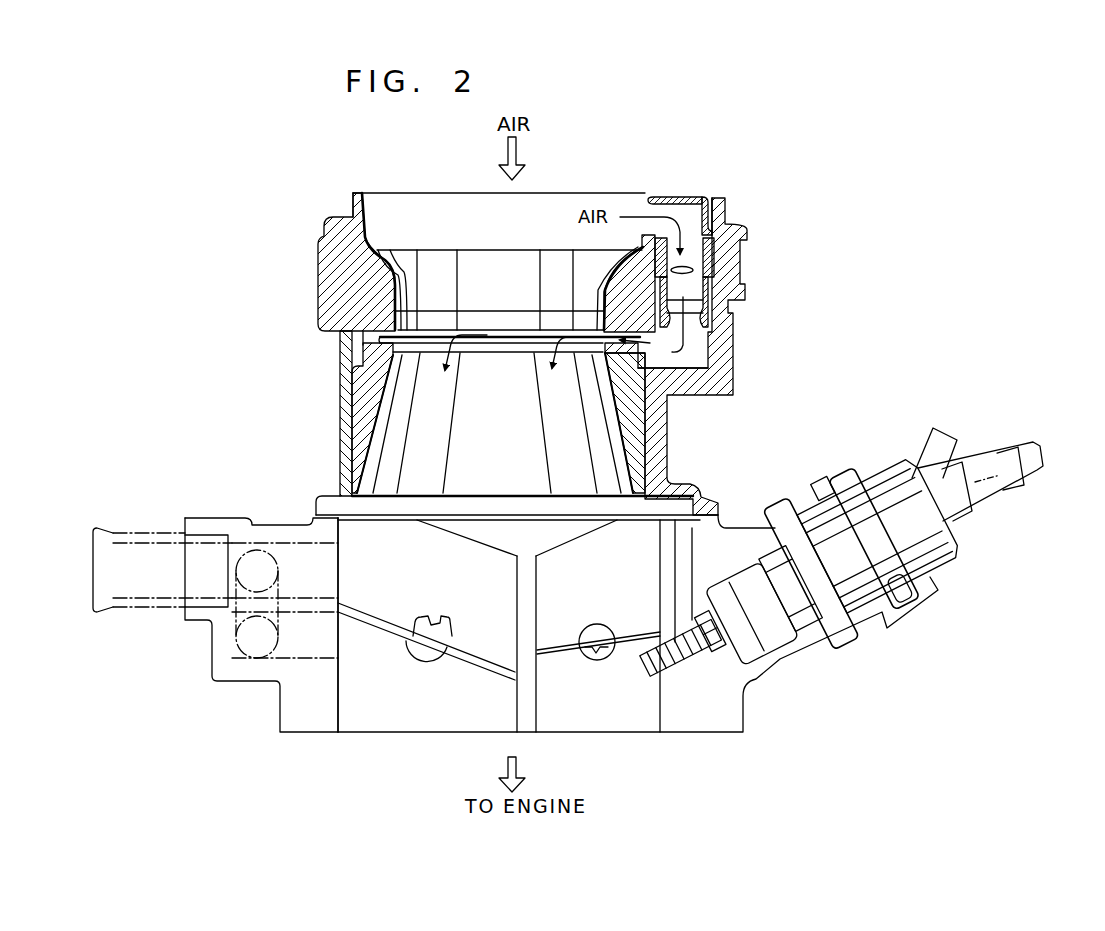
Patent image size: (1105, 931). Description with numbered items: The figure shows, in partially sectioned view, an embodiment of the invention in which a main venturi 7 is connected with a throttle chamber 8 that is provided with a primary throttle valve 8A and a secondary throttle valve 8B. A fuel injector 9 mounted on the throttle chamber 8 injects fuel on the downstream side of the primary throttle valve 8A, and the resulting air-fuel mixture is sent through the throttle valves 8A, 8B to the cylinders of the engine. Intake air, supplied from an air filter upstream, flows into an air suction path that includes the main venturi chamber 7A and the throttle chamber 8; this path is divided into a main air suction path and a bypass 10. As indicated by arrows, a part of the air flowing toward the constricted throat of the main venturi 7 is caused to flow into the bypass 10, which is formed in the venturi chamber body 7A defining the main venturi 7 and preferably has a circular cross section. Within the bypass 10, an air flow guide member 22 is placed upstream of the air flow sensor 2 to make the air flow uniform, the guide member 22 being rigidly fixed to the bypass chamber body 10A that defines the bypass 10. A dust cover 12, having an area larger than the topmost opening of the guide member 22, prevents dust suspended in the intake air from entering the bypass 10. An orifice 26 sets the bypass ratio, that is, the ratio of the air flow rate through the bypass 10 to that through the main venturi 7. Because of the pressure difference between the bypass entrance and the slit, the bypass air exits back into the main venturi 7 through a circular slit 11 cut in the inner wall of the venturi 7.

The air flow sensor 2 is at (720, 232).
The main venturi 7 is at (506, 290).
The venturi chamber body 7A is at (322, 298).
The throttle chamber 8 is at (380, 745).
The primary throttle valve 8A is at (558, 645).
The secondary throttle valve 8B is at (375, 620).
The fuel injector 9 is at (930, 620).
The bypass 10 is at (694, 196).
The bypass chamber body 10A is at (708, 293).
The circular slit 11 is at (534, 345).
The dust cover 12 is at (664, 196).
The air flow guide member 22 is at (714, 256).
The orifice 26 is at (692, 312).